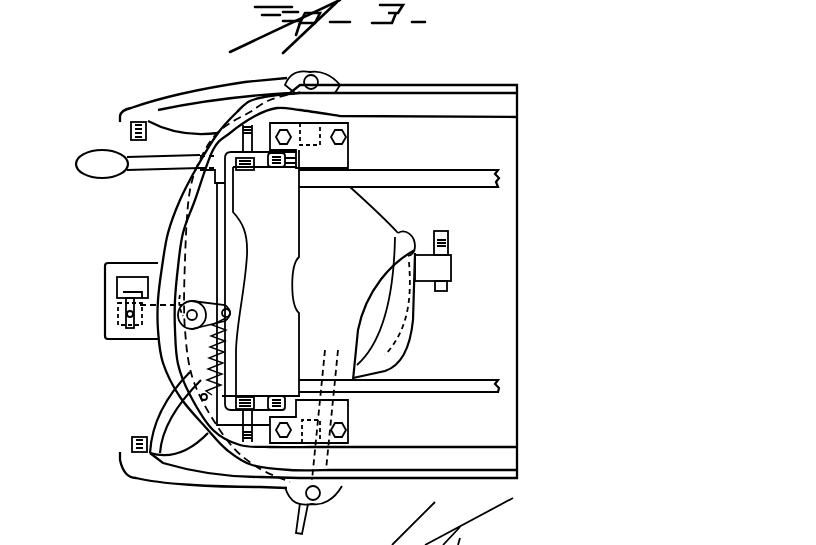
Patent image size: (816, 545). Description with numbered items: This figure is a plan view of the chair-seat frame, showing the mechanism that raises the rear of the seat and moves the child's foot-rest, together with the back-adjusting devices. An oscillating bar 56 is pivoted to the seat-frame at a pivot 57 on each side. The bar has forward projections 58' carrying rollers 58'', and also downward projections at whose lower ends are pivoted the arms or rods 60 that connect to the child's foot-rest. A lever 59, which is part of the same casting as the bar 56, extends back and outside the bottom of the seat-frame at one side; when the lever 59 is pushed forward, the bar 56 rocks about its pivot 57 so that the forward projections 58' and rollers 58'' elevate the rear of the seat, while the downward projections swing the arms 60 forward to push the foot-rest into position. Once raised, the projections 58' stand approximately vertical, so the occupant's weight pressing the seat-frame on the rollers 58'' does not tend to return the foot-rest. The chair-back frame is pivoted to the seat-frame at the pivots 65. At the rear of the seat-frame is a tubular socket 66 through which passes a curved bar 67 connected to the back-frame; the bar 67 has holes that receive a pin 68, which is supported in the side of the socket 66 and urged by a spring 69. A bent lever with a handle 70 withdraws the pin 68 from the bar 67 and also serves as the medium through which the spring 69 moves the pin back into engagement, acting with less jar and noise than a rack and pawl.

The oscillating bar 56 is at (232, 277).
The pivot 57 is at (246, 172).
The forward projection 58' is at (282, 281).
The roller 58'' is at (309, 301).
The lever 59 is at (145, 171).
The arm or rod 60 is at (415, 176).
The pivot 65 is at (130, 131).
The tubular socket 66 is at (105, 318).
The curved bar 67 is at (138, 276).
The pin 68 is at (130, 330).
The spring 69 is at (160, 402).
The handle 70 is at (115, 467).